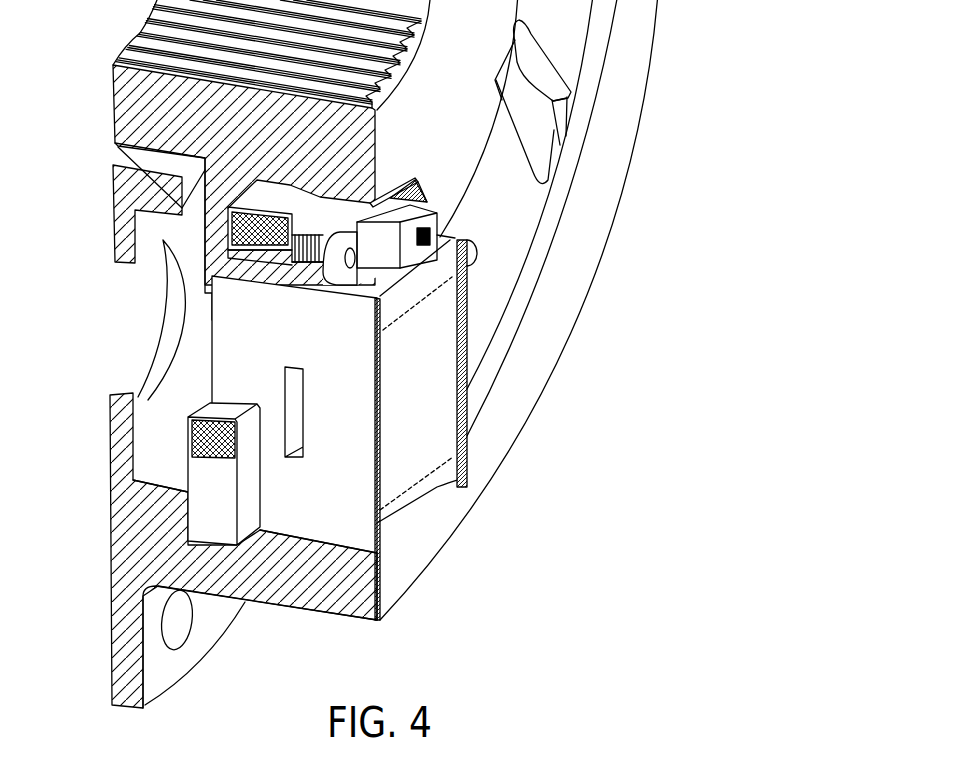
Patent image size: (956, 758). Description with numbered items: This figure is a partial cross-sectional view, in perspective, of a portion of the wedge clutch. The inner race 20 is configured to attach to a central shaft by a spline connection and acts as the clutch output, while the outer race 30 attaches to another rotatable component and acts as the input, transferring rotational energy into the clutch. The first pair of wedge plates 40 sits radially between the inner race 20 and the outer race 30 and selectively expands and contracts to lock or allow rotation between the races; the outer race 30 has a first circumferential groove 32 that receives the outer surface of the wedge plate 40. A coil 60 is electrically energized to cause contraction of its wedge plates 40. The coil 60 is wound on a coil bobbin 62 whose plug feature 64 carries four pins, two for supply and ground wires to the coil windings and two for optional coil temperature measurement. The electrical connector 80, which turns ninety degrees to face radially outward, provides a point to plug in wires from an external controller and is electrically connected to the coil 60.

The inner race 20 is at (117, 95).
The outer race 30 is at (520, 420).
The first circumferential groove 32 is at (562, 115).
The first pair of wedge plates 40 is at (565, 50).
The coil 60 is at (363, 535).
The coil bobbin 62 is at (208, 503).
The plug feature 64 is at (195, 443).
The electrical connector 80 is at (278, 203).